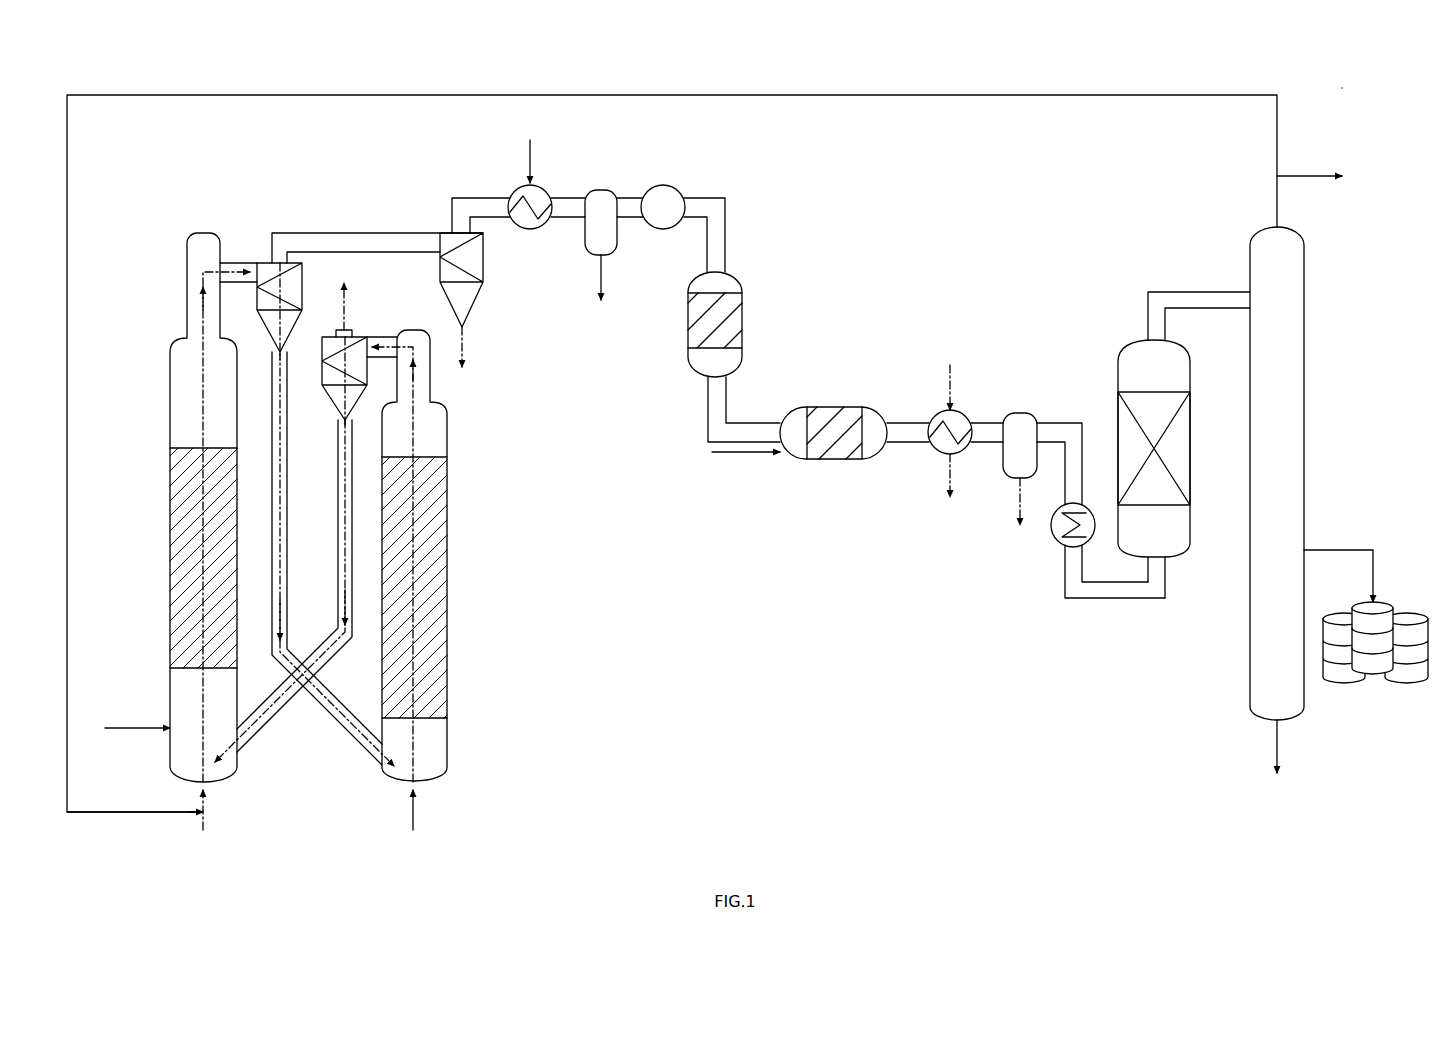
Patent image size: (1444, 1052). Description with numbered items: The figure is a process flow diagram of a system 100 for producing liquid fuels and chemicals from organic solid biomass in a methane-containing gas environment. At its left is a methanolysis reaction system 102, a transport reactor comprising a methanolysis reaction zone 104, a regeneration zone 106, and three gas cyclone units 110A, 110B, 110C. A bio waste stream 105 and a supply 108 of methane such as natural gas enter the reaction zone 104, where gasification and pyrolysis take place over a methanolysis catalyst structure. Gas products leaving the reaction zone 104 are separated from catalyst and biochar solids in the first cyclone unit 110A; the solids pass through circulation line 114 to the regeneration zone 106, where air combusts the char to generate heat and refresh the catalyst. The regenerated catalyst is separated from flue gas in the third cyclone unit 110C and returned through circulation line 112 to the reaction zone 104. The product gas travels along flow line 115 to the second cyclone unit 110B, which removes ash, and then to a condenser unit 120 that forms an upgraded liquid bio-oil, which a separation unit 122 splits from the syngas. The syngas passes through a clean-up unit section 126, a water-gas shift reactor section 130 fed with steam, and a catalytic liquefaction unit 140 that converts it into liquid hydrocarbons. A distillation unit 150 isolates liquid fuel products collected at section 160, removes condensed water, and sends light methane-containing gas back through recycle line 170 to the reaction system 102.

The system 100 is at (1344, 87).
The methanolysis reaction system 102 is at (468, 694).
The methanolysis reaction zone 104 is at (170, 380).
The bio waste stream 105 is at (138, 735).
The regeneration zone 106 is at (447, 510).
The supply of methane 108 is at (122, 812).
The first cyclone unit 110A is at (293, 278).
The second cyclone unit 110B is at (485, 258).
The third cyclone unit 110C is at (360, 365).
The circulation line 112 is at (352, 620).
The circulation line 114 is at (272, 598).
The flow line 115 is at (385, 233).
The condenser unit 120 is at (545, 190).
The separation unit 122 is at (601, 190).
The clean-up unit section 126 is at (730, 270).
The reactor section 130 is at (868, 562).
The catalytic liquefaction unit 140 is at (1128, 345).
The distillation unit 150 is at (1304, 318).
The section 160 is at (1417, 616).
The recycle line 170 is at (1077, 95).